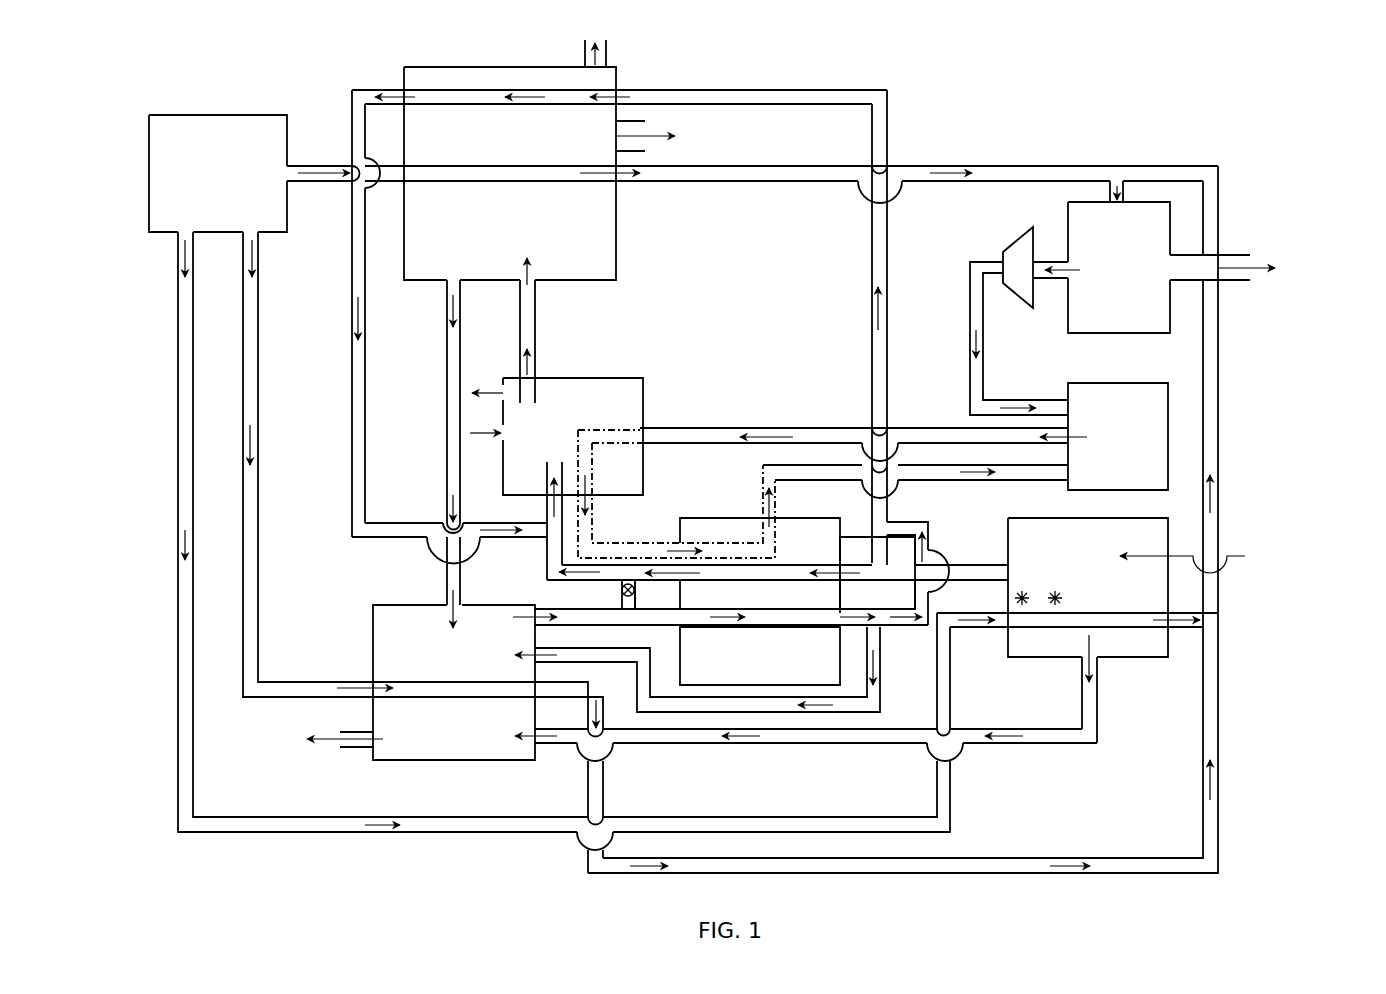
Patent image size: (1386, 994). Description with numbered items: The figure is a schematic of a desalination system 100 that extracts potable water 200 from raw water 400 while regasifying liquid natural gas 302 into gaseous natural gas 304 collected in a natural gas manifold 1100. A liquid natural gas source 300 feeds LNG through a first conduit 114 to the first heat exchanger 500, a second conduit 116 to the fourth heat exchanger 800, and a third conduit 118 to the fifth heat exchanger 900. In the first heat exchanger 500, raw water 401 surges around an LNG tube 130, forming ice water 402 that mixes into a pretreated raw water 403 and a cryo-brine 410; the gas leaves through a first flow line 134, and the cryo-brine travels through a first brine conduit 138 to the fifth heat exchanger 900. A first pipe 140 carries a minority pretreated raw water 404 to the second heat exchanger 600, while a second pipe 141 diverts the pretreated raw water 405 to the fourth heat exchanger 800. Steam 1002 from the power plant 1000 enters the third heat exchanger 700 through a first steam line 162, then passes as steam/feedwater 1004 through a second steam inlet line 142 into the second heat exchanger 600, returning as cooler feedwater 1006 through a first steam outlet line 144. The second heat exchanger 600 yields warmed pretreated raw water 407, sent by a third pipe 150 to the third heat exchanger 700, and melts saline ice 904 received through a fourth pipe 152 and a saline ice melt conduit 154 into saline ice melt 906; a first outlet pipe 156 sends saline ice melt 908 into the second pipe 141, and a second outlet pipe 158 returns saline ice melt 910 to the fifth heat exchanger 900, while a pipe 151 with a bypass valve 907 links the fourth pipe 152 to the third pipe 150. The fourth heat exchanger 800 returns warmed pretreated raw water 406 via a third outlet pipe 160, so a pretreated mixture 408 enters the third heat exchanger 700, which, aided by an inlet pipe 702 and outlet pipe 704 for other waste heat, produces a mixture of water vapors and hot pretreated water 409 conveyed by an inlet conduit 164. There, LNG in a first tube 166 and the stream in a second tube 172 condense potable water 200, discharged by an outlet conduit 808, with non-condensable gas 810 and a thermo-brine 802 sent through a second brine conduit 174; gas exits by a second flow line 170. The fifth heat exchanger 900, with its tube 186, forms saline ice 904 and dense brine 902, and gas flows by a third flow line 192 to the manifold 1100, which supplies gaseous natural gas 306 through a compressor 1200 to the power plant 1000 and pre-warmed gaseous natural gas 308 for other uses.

The desalination system 100 is at (126, 72).
The first conduit 114 is at (178, 590).
The second conduit 116 is at (340, 164).
The third conduit 118 is at (260, 577).
The LNG tube 130 is at (1043, 628).
The first flow line 134 is at (1195, 630).
The first brine conduit 138 is at (858, 745).
The first pipe 140 is at (964, 565).
The second pipe 141 is at (888, 352).
The second steam inlet line 142 is at (593, 508).
The first steam outlet line 144 is at (763, 480).
The third pipe 150 is at (547, 550).
The pipe 151 is at (640, 592).
The fourth pipe 152 is at (665, 628).
The saline ice melt conduit 154 is at (757, 628).
The first outlet pipe 156 is at (934, 607).
The second outlet pipe 158 is at (867, 717).
The third outlet pipe 160 is at (350, 480).
The first steam line 162 is at (828, 426).
The inlet conduit 164 is at (537, 348).
The first tube 166 is at (568, 185).
The second flow line 170 is at (790, 186).
The second tube 172 is at (458, 88).
The second brine conduit 174 is at (446, 412).
The tube 186 is at (453, 700).
The third flow line 192 is at (603, 790).
The potable water 200 is at (652, 133).
The liquid natural gas source 300 is at (149, 178).
The liquid natural gas 302 is at (178, 258).
The gaseous natural gas 304 is at (600, 170).
The gaseous natural gas 306 is at (984, 333).
The pre-warmed gaseous natural gas 308 is at (1232, 282).
The raw water 400 is at (1139, 587).
The raw water 401 is at (1155, 555).
The ice water 402 is at (1053, 585).
The pretreated raw water 403 is at (1003, 565).
The minority pretreated raw water 404 is at (722, 650).
The pretreated raw water 405 is at (620, 98).
The warmed pretreated raw water 406 is at (392, 92).
The warmed pretreated raw water 407 is at (663, 567).
The pretreated mixture 408 is at (547, 510).
The mixture of water vapors and hot pretreated water 409 is at (537, 302).
The cryo-brine 410 is at (745, 745).
The first heat exchanger 500 is at (1123, 660).
The second heat exchanger 600 is at (868, 695).
The third heat exchanger 700 is at (645, 390).
The inlet pipe 702 is at (480, 436).
The outlet pipe 704 is at (480, 390).
The fourth heat exchanger 800 is at (505, 66).
The thermo-brine 802 is at (447, 290).
The outlet conduit 808 is at (640, 98).
The non-condensable gas 810 is at (585, 62).
The fifth heat exchanger 900 is at (372, 617).
The dense brine 902 is at (328, 748).
The saline ice 904 is at (530, 615).
The saline ice melt 906 is at (855, 630).
The bypass valve 907 is at (625, 598).
The saline ice melt 908 is at (903, 615).
The saline ice melt 910 is at (822, 710).
The power plant 1000 is at (1170, 435).
The steam 1002 is at (772, 427).
The steam/feedwater 1004 is at (670, 546).
The cooler feedwater 1006 is at (777, 497).
The natural gas manifold 1100 is at (1172, 232).
The compressor 1200 is at (1020, 226).